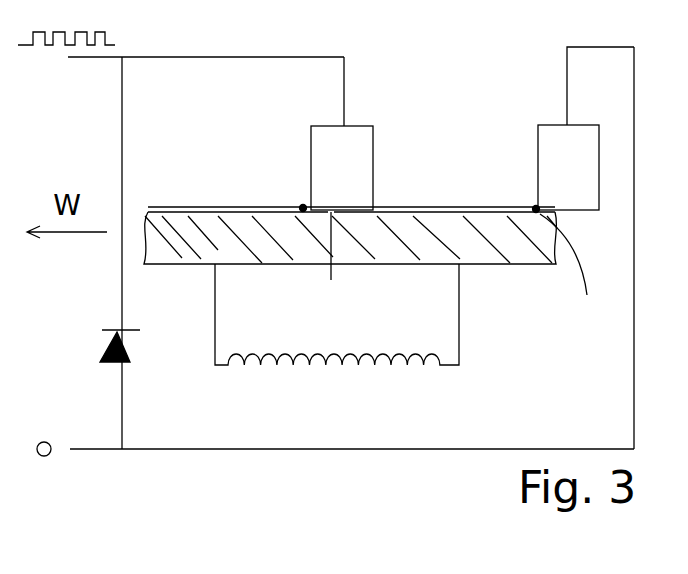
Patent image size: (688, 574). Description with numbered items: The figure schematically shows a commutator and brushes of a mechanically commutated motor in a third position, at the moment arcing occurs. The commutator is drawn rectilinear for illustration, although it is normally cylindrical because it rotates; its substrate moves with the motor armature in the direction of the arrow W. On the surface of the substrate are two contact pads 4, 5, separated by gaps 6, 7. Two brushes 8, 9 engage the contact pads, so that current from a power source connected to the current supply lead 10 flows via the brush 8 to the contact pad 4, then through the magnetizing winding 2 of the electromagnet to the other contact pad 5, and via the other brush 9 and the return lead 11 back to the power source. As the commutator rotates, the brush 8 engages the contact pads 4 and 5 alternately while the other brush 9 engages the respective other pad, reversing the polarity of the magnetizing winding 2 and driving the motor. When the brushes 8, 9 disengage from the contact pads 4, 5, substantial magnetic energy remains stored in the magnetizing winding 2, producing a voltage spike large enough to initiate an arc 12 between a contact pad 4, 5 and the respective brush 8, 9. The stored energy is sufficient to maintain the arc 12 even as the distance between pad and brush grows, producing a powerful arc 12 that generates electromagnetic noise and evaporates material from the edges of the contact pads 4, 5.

The magnetizing winding 2 is at (392, 362).
The contact pad 4 is at (240, 205).
The contact pad 5 is at (500, 207).
The gap 6 is at (330, 260).
The gap 7 is at (567, 274).
The brush 8 is at (354, 126).
The brush 9 is at (555, 125).
The current supply lead 10 is at (200, 57).
The return lead 11 is at (228, 449).
The arc 12 is at (302, 205).